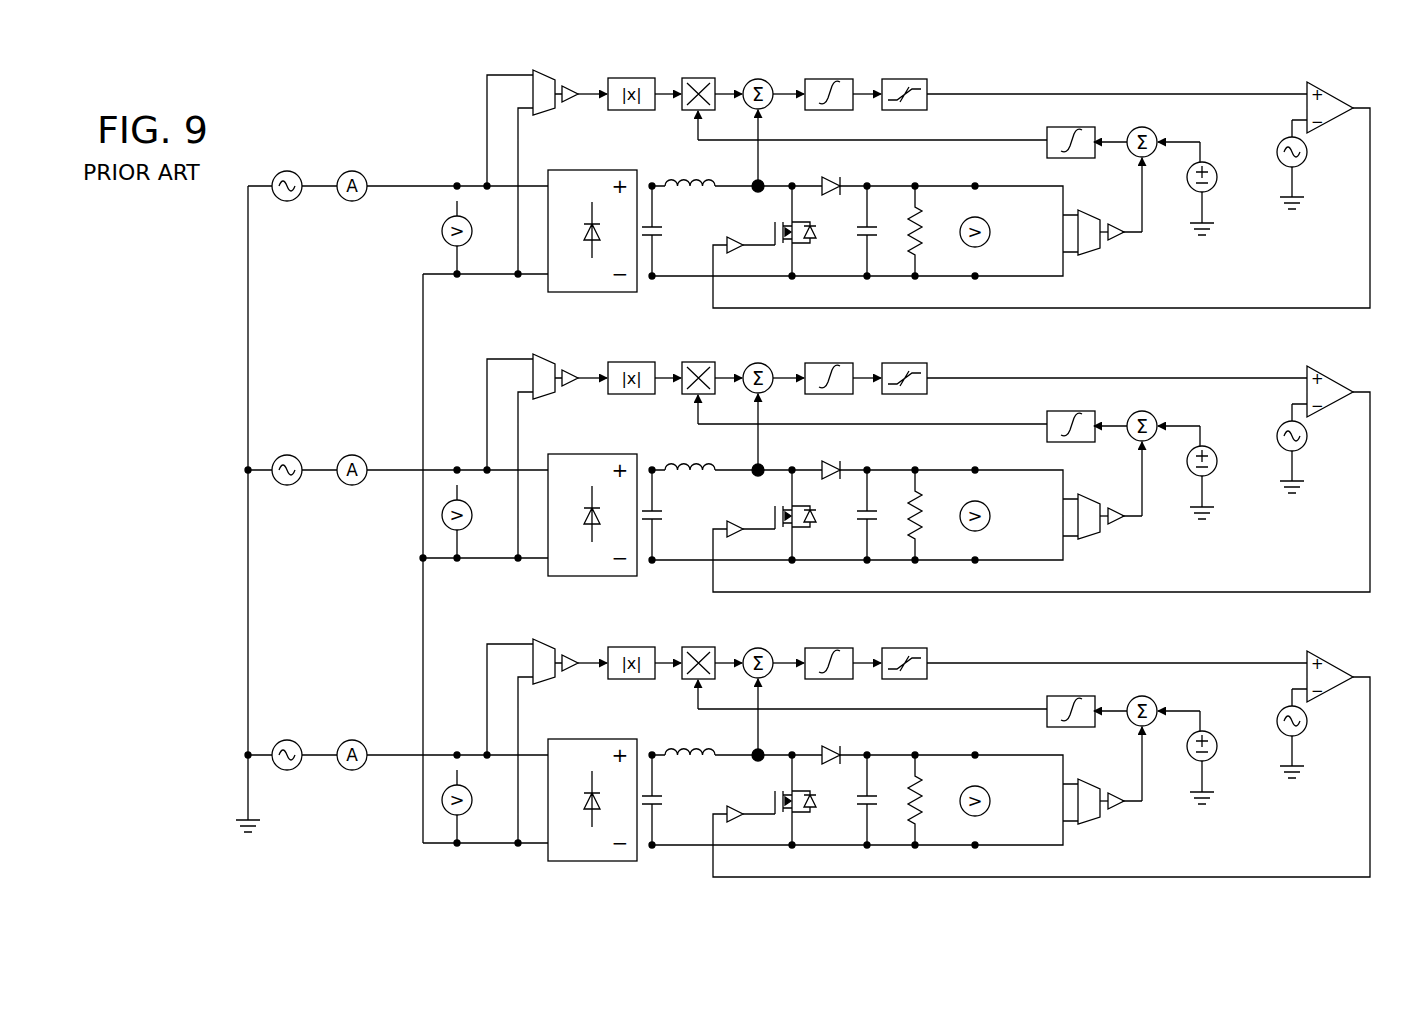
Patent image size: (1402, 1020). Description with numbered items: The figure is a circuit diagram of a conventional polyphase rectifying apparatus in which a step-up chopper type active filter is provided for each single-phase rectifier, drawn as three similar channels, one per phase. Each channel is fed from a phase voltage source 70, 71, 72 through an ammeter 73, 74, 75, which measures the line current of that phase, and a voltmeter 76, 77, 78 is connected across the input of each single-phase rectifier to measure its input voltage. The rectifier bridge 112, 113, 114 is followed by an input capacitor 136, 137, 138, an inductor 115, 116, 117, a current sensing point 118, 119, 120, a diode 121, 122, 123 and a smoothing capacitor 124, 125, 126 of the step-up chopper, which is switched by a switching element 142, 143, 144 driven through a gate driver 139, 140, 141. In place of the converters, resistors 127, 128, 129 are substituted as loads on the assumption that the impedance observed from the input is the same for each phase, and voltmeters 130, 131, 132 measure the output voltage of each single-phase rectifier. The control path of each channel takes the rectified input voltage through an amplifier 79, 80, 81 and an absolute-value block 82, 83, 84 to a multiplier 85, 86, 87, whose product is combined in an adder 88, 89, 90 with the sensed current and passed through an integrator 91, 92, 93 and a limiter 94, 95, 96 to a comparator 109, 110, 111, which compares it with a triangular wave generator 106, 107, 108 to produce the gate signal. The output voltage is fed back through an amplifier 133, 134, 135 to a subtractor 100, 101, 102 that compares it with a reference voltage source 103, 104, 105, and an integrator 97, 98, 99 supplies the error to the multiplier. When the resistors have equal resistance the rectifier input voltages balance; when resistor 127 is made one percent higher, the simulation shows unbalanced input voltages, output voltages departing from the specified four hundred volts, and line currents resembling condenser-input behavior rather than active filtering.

The AC voltage source (phase R) 70 is at (287, 171).
The AC voltage source (phase S) 71 is at (294, 470).
The AC voltage source (phase T) 72 is at (294, 755).
The ammeter 73 is at (352, 171).
The ammeter 74 is at (360, 459).
The ammeter 75 is at (360, 744).
The voltmeter 76 is at (442, 234).
The voltmeter 77 is at (444, 522).
The voltmeter 78 is at (443, 807).
The amplifier 79 is at (552, 72).
The amplifier 80 is at (555, 358).
The amplifier 81 is at (555, 643).
The absolute value circuit 82 is at (638, 78).
The absolute value circuit 83 is at (635, 356).
The absolute value circuit 84 is at (635, 641).
The multiplier 85 is at (706, 78).
The multiplier 86 is at (707, 356).
The multiplier 87 is at (707, 641).
The adder 88 is at (763, 81).
The adder 89 is at (761, 365).
The adder 90 is at (761, 650).
The integrator 91 is at (834, 79).
The integrator 92 is at (832, 356).
The integrator 93 is at (832, 641).
The limiter 94 is at (910, 79).
The limiter 95 is at (909, 356).
The limiter 96 is at (909, 641).
The integrator 97 is at (1075, 156).
The integrator 98 is at (1087, 440).
The integrator 99 is at (1087, 725).
The subtractor 100 is at (1130, 130).
The subtractor 101 is at (1117, 418).
The subtractor 102 is at (1117, 703).
The reference voltage source 103 is at (1204, 192).
The reference voltage source 104 is at (1225, 485).
The reference voltage source 105 is at (1225, 770).
The triangular wave generator 106 is at (1280, 146).
The triangular wave generator 107 is at (1276, 444).
The triangular wave generator 108 is at (1276, 729).
The comparator 109 is at (1326, 82).
The comparator 110 is at (1337, 373).
The comparator 111 is at (1337, 658).
The rectifier 112 is at (590, 170).
The rectifier 113 is at (592, 492).
The rectifier 114 is at (592, 777).
The inductor 115 is at (680, 178).
The inductor 116 is at (681, 440).
The inductor 117 is at (681, 725).
The current detector 118 is at (751, 182).
The current detector 119 is at (735, 449).
The current detector 120 is at (735, 734).
The diode 121 is at (820, 182).
The diode 122 is at (809, 451).
The diode 123 is at (809, 736).
The smoothing capacitor 124 is at (872, 218).
The smoothing capacitor 125 is at (880, 495).
The smoothing capacitor 126 is at (880, 780).
The resistor 127 is at (924, 210).
The resistor 128 is at (935, 495).
The resistor 129 is at (935, 780).
The voltmeter 130 is at (988, 224).
The voltmeter 131 is at (1008, 502).
The voltmeter 132 is at (1008, 787).
The amplifier 133 is at (1117, 242).
The amplifier 134 is at (1129, 524).
The amplifier 135 is at (1129, 809).
The capacitor 136 is at (664, 226).
The capacitor 137 is at (685, 515).
The capacitor 138 is at (685, 800).
The gate driver 139 is at (734, 256).
The gate driver 140 is at (745, 557).
The gate driver 141 is at (745, 842).
The switching element 142 is at (804, 246).
The switching element 143 is at (808, 532).
The switching element 144 is at (808, 817).